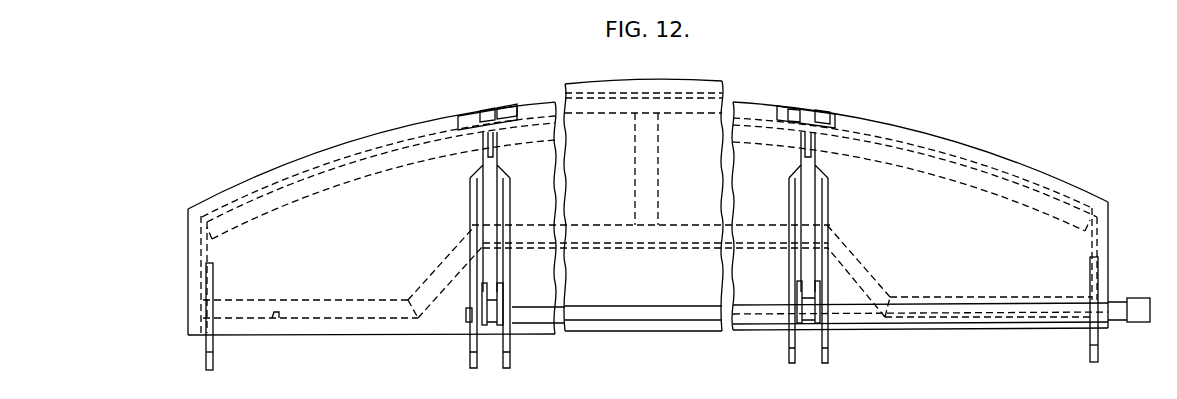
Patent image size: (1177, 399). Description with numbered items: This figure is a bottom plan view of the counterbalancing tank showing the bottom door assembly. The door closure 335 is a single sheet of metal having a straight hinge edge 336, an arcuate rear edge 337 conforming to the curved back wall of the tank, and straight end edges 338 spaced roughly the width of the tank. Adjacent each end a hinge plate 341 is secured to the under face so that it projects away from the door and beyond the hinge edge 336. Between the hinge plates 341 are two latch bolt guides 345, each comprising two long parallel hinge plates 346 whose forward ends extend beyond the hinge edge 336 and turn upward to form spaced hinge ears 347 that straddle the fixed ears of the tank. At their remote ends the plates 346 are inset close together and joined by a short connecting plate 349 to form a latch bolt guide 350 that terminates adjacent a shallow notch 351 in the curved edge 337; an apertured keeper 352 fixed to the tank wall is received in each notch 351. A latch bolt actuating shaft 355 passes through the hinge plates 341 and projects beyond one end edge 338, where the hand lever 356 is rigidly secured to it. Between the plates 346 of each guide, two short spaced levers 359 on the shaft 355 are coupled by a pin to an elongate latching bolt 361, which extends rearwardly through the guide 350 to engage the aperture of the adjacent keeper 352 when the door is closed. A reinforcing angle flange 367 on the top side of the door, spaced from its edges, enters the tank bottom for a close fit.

The door closure 335 is at (958, 194).
The hinge edge 336 is at (337, 336).
The arcuate rear edge 337 is at (648, 206).
The end edges 338 is at (188, 269).
The hinge plate 341 is at (206, 345).
The latch bolt guide 345 is at (466, 211).
The parallel hinge plates 346 is at (470, 198).
The hinge ears 347 is at (473, 369).
The short connecting plate 349 is at (820, 137).
The latch bolt guide 350 is at (493, 122).
The notch 351 is at (463, 116).
The apertured keeper 352 is at (468, 116).
The latch bolt actuating shaft 355 is at (955, 308).
The hand lever 356 is at (1137, 323).
The short spaced levers 359 is at (819, 300).
The latching bolt 361 is at (801, 199).
The angle flange 367 is at (276, 327).